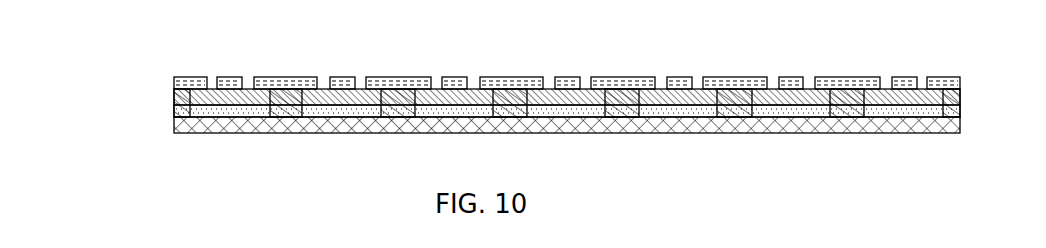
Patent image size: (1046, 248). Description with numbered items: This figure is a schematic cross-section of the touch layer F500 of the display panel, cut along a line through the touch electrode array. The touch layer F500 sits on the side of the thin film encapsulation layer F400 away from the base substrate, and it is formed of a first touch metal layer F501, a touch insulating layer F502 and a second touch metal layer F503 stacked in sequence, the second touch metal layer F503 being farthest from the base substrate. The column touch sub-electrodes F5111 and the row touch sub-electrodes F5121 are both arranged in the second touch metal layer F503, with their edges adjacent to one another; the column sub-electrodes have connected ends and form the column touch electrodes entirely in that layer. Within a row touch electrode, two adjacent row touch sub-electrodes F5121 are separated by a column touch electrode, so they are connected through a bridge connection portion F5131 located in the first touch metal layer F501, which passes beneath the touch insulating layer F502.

The touch layer F500 is at (501, 99).
The thin film encapsulation layer F400 is at (171, 126).
The first touch metal layer F501 is at (186, 110).
The touch insulating layer F502 is at (171, 101).
The second touch metal layer F503 is at (526, 59).
The column touch sub-electrode F5111 is at (229, 82).
The row touch sub-electrode F5121 is at (298, 83).
The bridge connection portion F5131 is at (236, 113).